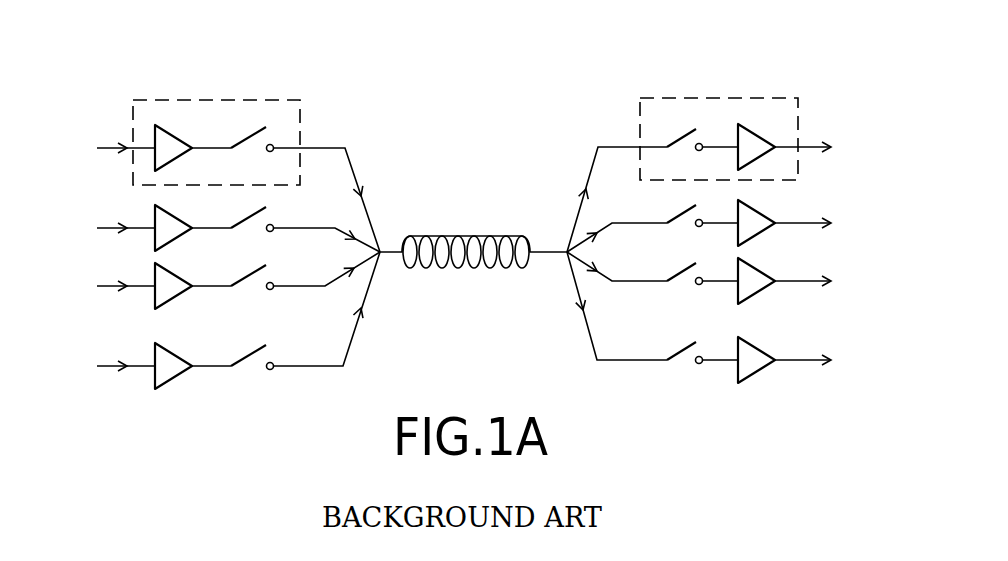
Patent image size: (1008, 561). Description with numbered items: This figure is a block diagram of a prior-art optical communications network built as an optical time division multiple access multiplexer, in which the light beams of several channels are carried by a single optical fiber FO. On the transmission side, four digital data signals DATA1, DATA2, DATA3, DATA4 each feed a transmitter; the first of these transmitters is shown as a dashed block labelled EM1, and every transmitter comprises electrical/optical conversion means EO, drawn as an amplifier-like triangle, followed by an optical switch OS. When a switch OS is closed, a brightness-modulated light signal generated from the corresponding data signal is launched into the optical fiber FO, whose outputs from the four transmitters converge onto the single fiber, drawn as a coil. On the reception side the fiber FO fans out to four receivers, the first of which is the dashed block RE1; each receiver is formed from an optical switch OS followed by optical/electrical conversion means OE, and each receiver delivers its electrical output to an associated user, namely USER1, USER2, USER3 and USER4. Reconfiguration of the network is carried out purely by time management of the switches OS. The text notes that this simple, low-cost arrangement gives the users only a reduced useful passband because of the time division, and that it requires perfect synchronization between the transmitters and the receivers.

The electrical/optical conversion means EO is at (165, 145).
The transmitter EM1 is at (233, 101).
The optical switch OS is at (250, 133).
The optical fiber FO is at (473, 237).
The receiver RE1 is at (730, 98).
The optical/electrical conversion means OE is at (754, 141).
The digital data signal DATA1 is at (91, 147).
The digital data signal DATA2 is at (91, 227).
The digital data signal DATA3 is at (91, 285).
The digital data signal DATA4 is at (91, 365).
The user USER1 is at (841, 147).
The user USER2 is at (841, 223).
The user USER3 is at (841, 281).
The user USER4 is at (841, 360).